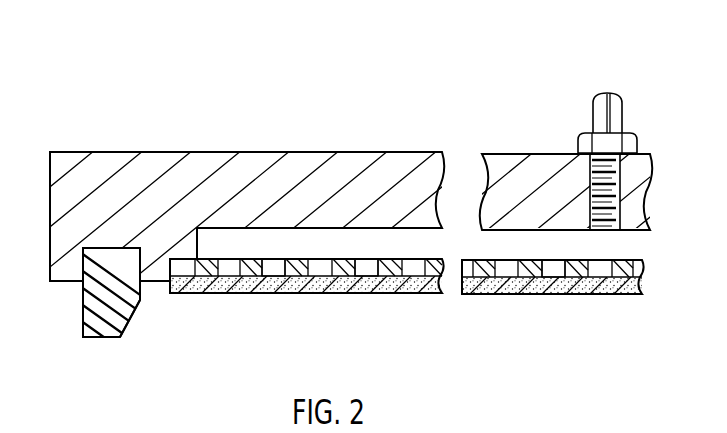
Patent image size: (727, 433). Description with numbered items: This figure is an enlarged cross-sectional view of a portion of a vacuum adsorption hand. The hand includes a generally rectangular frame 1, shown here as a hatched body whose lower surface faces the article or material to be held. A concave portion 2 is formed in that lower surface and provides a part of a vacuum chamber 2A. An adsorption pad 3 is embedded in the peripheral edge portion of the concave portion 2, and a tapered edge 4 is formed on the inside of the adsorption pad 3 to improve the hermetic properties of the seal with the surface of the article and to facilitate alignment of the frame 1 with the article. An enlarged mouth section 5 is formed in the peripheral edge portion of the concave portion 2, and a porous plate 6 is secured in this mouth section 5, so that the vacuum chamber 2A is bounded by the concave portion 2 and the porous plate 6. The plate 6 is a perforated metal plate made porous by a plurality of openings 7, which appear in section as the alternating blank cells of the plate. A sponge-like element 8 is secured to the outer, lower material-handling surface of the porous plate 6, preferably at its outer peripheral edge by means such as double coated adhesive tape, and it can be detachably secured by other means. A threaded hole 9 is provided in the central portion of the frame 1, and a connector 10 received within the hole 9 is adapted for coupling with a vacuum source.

The frame 1 is at (267, 157).
The concave portion 2 is at (212, 244).
The vacuum chamber 2A is at (381, 240).
The adsorption pad 3 is at (98, 287).
The tapered edge 4 is at (130, 319).
The enlarged mouth section 5 is at (184, 257).
The porous plate 6 is at (268, 258).
The openings 7 is at (275, 272).
The sponge-like element 8 is at (313, 288).
The threaded hole 9 is at (590, 178).
The connector 10 is at (593, 105).